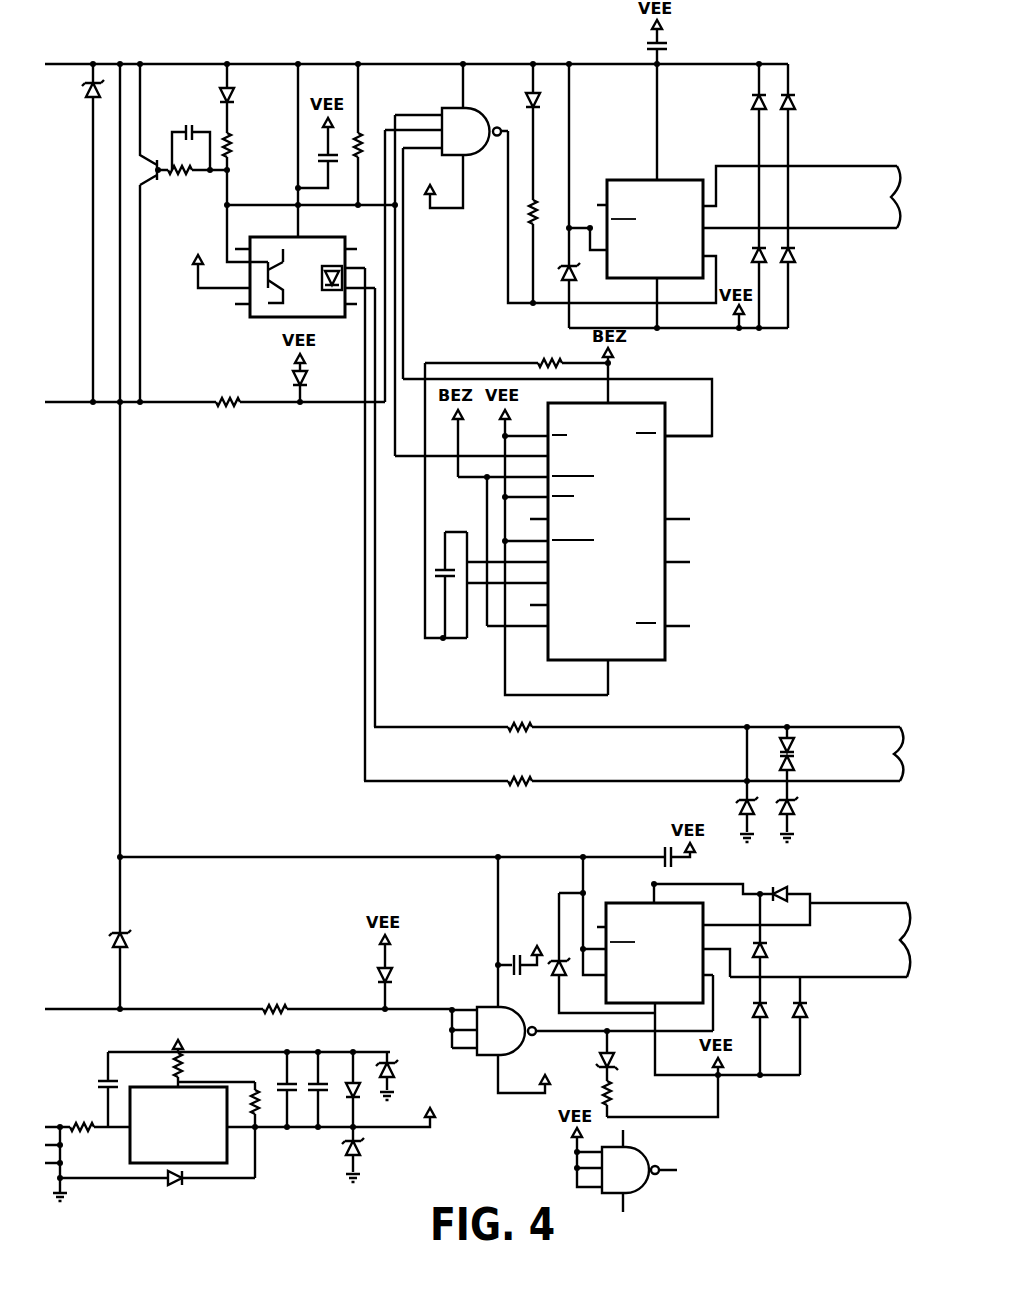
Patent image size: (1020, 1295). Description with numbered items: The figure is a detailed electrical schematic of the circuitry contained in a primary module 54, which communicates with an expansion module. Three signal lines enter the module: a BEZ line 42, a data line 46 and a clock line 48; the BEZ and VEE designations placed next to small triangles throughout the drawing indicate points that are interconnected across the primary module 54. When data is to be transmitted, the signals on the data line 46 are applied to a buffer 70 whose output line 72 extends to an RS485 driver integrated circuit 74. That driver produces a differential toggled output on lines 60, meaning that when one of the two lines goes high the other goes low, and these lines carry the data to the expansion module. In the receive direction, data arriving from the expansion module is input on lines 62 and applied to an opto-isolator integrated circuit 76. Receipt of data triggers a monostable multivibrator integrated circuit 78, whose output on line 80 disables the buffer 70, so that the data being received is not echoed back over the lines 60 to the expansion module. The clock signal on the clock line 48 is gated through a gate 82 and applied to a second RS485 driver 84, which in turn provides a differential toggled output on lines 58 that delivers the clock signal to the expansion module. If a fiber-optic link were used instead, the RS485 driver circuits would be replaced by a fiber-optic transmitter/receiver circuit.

The BEZ line 42 is at (130, 64).
The data line 46 is at (118, 405).
The clock line 48 is at (102, 1012).
The primary module 54 is at (322, 1199).
The lines 58 is at (820, 929).
The lines 60 is at (801, 186).
The lines 62 is at (633, 786).
The buffer 70 is at (473, 110).
The output line 72 is at (508, 172).
The RS485 driver integrated circuit 74 is at (672, 180).
The opto-isolator integrated circuit 76 is at (266, 318).
The monostable multivibrator integrated circuit 78 is at (640, 661).
The output line 80 is at (712, 395).
The gate 82 is at (486, 1057).
The RS485 driver 84 is at (703, 910).